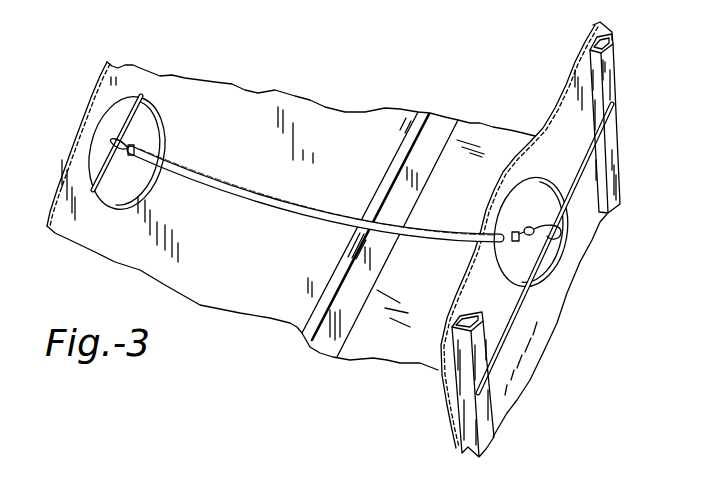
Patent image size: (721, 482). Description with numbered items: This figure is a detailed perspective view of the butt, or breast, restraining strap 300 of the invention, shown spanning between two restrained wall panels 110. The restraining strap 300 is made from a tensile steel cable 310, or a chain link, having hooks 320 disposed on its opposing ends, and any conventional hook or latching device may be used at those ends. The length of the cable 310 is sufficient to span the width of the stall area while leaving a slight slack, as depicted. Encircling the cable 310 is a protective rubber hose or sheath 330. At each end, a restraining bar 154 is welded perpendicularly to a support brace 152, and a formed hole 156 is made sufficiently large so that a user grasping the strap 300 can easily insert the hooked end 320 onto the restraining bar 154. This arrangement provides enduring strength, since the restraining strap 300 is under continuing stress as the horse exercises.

The wall panel 110 is at (229, 262).
The support brace 152 is at (493, 438).
The restraining bar 154 is at (143, 97).
The formed hole 156 is at (122, 97).
The restraining strap 300 is at (247, 168).
The tensile steel cable 310 is at (540, 178).
The hook 320 is at (607, 211).
The protective rubber hose or sheath 330 is at (373, 223).